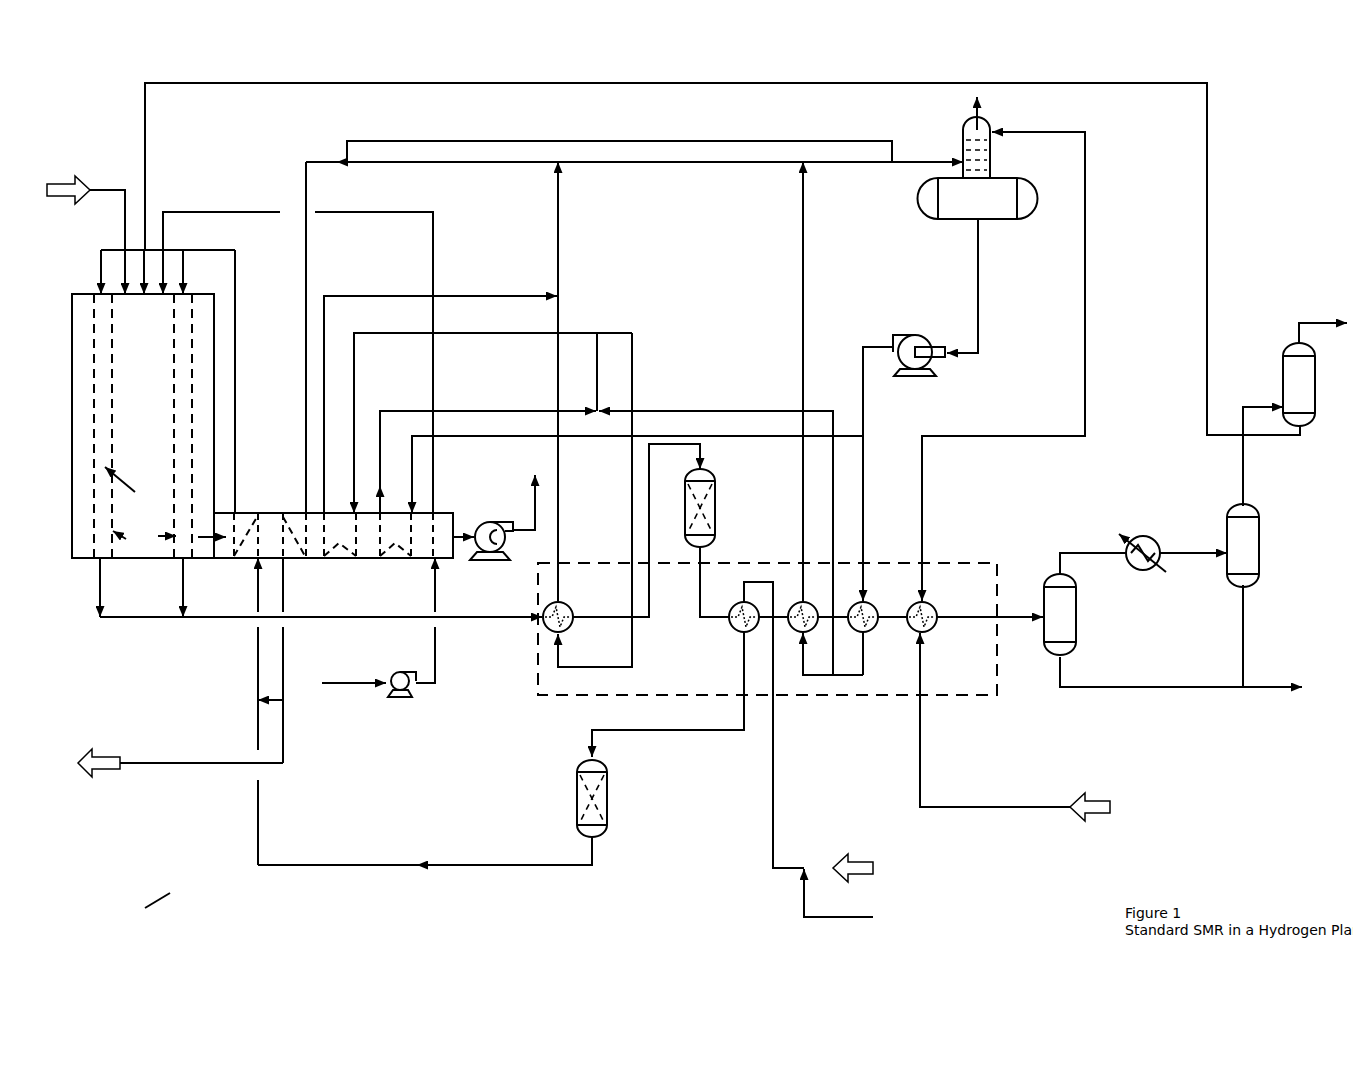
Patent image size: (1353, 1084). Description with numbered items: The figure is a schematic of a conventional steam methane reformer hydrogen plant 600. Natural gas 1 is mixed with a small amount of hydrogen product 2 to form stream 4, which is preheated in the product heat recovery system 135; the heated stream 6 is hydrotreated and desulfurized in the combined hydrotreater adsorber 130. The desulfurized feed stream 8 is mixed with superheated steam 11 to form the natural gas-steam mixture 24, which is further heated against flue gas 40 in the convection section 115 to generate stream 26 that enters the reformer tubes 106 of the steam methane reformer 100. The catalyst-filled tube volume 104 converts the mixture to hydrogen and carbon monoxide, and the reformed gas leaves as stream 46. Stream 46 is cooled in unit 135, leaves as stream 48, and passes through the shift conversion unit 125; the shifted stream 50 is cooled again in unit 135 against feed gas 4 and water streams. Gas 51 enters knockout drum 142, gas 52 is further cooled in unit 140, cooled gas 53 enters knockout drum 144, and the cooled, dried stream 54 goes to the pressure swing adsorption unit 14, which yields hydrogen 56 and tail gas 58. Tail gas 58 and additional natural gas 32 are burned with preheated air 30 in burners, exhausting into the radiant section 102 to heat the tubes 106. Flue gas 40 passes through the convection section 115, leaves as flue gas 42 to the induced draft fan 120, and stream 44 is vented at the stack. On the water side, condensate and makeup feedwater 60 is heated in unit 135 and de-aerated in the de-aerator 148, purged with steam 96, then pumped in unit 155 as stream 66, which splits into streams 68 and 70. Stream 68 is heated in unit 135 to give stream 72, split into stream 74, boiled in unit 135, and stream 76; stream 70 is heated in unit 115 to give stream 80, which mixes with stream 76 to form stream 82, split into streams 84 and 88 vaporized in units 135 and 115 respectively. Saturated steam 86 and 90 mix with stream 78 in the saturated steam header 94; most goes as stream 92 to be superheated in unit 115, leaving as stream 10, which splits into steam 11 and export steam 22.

The natural gas 1 is at (800, 830).
The hydrogen product 2 is at (878, 897).
The stream 4 is at (840, 732).
The heated stream 6 is at (668, 694).
The desulfurized feed stream 8 is at (425, 851).
The superheated steam stream 10 is at (299, 660).
The superheated steam 11 is at (270, 686).
The PSA unit 14 is at (1318, 384).
The export steam stream 22 is at (180, 752).
The natural gas-steam mixture 24 is at (244, 711).
The heated natural gas-steam stream 26 is at (246, 381).
The preheated air 30 is at (298, 352).
The additional natural gas 32 is at (86, 197).
The flue gas 40 is at (208, 524).
The flue gas 42 is at (464, 522).
The stream 44 is at (517, 493).
The reformed gas stream 46 is at (378, 635).
The syngas stream 48 is at (636, 530).
The shifted gas stream 50 is at (714, 582).
The gas 51 is at (990, 603).
The gas 52 is at (1093, 554).
The cooled gas 53 is at (1193, 542).
The cooled and dried stream 54 is at (1263, 456).
The hydrogen 56 is at (1320, 304).
The tail gas 58 is at (722, 259).
The condensate and makeup boiler feedwater stream 60 is at (1070, 733).
The pumped boiler feed water stream 66 is at (981, 366).
The stream 68 is at (878, 474).
The stream 70 is at (637, 474).
The stream 72 is at (878, 656).
The stream 74 is at (833, 665).
The stream 76 is at (716, 528).
The stream 78 is at (785, 381).
The stream 80 is at (488, 452).
The stream 82 is at (606, 372).
The stream 84 is at (612, 500).
The saturated steam 86 is at (440, 393).
The stream 88 is at (493, 423).
The saturated steam 90 is at (572, 381).
The saturated steam 92 is at (634, 337).
The saturated steam header 94 is at (619, 141).
The steam 96 is at (920, 151).
The steam methane reformer 100 is at (321, 587).
The radiant section 102 is at (153, 404).
The tube volume 104 is at (130, 483).
The reformer tubes 106 is at (144, 536).
The heat recovery unit 115 is at (333, 551).
The induced draft fan 120 is at (491, 556).
The shift conversion unit 125 is at (720, 508).
The combined hydrotreater adsorber 130 is at (610, 798).
The product heat recovery system 135 is at (767, 629).
The cooling unit 140 is at (1142, 565).
The knockout drum 142 is at (1078, 614).
The knockout drum 144 is at (1260, 595).
The de-aerator 148 is at (977, 158).
The boiler feed water pump 155 is at (935, 297).
The hydrogen plant 600 is at (141, 910).